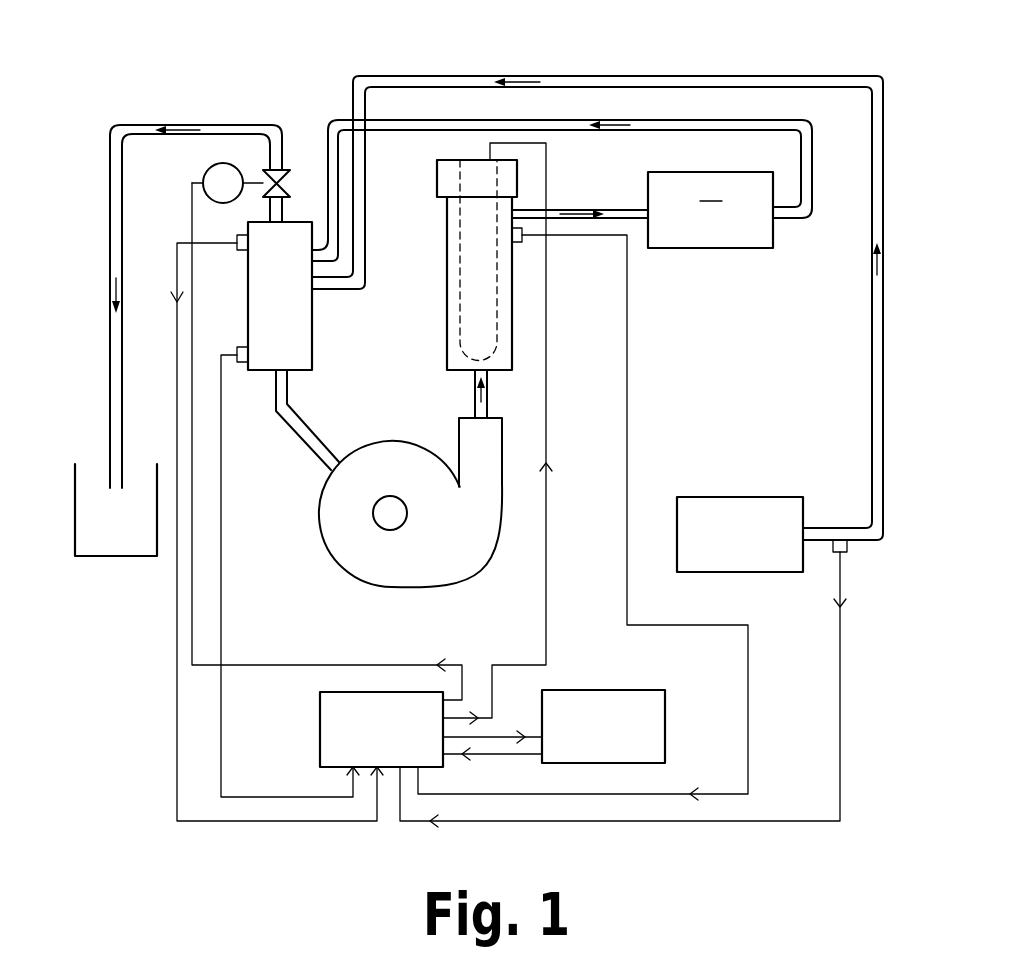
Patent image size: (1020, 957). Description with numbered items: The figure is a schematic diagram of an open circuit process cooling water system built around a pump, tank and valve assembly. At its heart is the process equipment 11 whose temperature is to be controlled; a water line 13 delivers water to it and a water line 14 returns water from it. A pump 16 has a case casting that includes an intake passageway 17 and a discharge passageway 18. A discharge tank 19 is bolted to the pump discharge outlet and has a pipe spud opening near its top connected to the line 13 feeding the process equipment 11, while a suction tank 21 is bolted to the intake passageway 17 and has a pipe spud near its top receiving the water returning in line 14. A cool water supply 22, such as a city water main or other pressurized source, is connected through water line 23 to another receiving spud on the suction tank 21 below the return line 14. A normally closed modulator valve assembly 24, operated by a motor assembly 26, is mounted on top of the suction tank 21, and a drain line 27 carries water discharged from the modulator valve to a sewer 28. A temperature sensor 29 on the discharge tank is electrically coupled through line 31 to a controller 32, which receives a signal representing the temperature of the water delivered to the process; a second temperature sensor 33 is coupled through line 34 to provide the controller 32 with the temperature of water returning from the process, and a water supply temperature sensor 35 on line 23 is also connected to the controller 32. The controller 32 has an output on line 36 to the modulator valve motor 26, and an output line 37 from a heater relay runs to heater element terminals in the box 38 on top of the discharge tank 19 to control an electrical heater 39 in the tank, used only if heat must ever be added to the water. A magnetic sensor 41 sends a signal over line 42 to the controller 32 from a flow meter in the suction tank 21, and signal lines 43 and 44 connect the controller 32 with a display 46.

The process equipment 11 is at (710, 210).
The water line 13 is at (560, 210).
The water line 14 is at (613, 123).
The pump 16 is at (372, 568).
The intake passageway 17 is at (325, 452).
The discharge passageway 18 is at (495, 425).
The discharge tank 19 is at (485, 340).
The suction tank 21 is at (290, 310).
The cool water supply 22 is at (800, 505).
The water line 23 is at (448, 80).
The modulator valve assembly 24 is at (282, 178).
The motor assembly 26 is at (213, 175).
The drain line 27 is at (113, 188).
The sewer 28 is at (98, 557).
The temperature sensor 29 is at (522, 240).
The line 31 is at (627, 398).
The controller 32 is at (320, 712).
The temperature sensor 33 is at (242, 252).
The line 34 is at (177, 640).
The water supply temperature sensor 35 is at (848, 550).
The output line 36 is at (192, 366).
The output line 37 is at (546, 618).
The box 38 is at (475, 165).
The electrical heater 39 is at (460, 310).
The magnetic sensor 41 is at (240, 362).
The line 42 is at (221, 758).
The signal line 43 is at (505, 755).
The signal line 44 is at (527, 735).
The display 46 is at (620, 690).